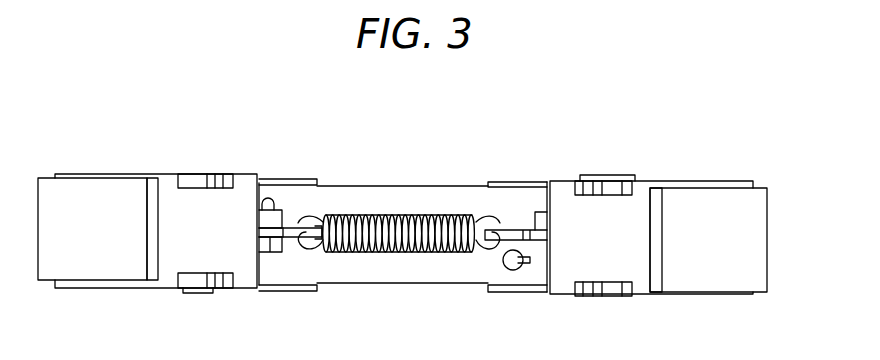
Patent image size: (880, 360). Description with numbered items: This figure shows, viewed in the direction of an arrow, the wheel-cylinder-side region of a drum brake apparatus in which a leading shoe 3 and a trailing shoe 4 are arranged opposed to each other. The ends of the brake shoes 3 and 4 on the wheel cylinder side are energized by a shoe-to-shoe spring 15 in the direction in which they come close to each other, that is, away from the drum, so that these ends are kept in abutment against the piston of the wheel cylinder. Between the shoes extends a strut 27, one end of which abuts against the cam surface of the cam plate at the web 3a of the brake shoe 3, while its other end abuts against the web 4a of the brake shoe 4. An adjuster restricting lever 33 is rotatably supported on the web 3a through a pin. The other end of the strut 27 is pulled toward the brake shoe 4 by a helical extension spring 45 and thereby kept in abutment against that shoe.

The leading shoe 3 is at (88, 190).
The web 3a is at (296, 231).
The trailing shoe 4 is at (705, 208).
The web 4a is at (511, 238).
The shoe-to-shoe spring 15 is at (418, 213).
The strut 27 is at (383, 196).
The adjuster restricting lever 33 is at (268, 253).
The helical extension spring 45 is at (511, 270).